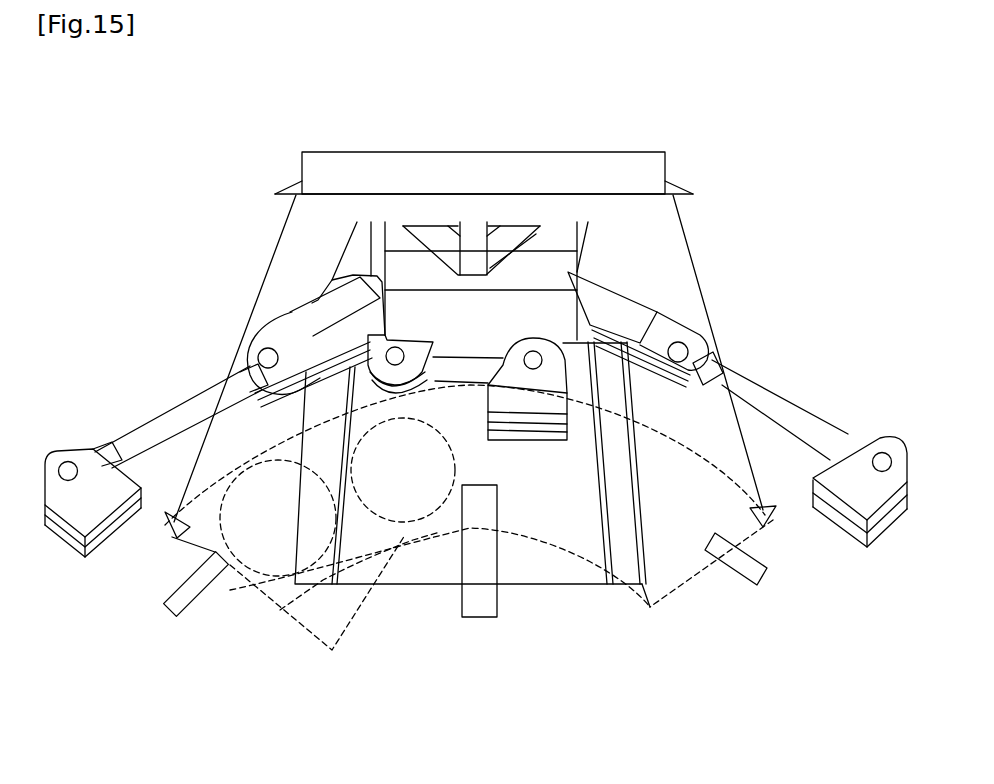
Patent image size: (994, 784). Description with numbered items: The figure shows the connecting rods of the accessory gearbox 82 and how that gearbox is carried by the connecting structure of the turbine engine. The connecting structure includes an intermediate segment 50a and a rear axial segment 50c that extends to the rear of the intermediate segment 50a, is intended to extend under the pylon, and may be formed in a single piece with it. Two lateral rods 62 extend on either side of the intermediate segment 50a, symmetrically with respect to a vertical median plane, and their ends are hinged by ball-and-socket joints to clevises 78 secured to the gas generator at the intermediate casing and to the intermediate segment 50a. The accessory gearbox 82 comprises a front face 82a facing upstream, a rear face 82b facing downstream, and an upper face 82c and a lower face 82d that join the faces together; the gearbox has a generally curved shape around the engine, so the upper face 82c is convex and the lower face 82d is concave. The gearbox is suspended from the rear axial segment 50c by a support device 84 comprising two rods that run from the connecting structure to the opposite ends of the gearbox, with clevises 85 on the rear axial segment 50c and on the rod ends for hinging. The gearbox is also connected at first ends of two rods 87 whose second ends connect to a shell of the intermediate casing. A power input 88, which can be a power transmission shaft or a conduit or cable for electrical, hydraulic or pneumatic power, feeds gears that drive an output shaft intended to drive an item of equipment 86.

The intermediate segment 50a is at (582, 276).
The rear axial segment 50c is at (668, 165).
The lateral rods 62 is at (190, 397).
The clevises 78 is at (548, 373).
The accessory gearbox 82 is at (666, 650).
The front face 82a is at (726, 586).
The rear face 82b is at (700, 645).
The upper face 82c is at (703, 463).
The lower face 82d is at (576, 540).
The support device 84 is at (249, 315).
The clevises 85 is at (288, 187).
The item of equipment 86 is at (332, 658).
The rods 87 is at (210, 590).
The power input 88 is at (480, 618).